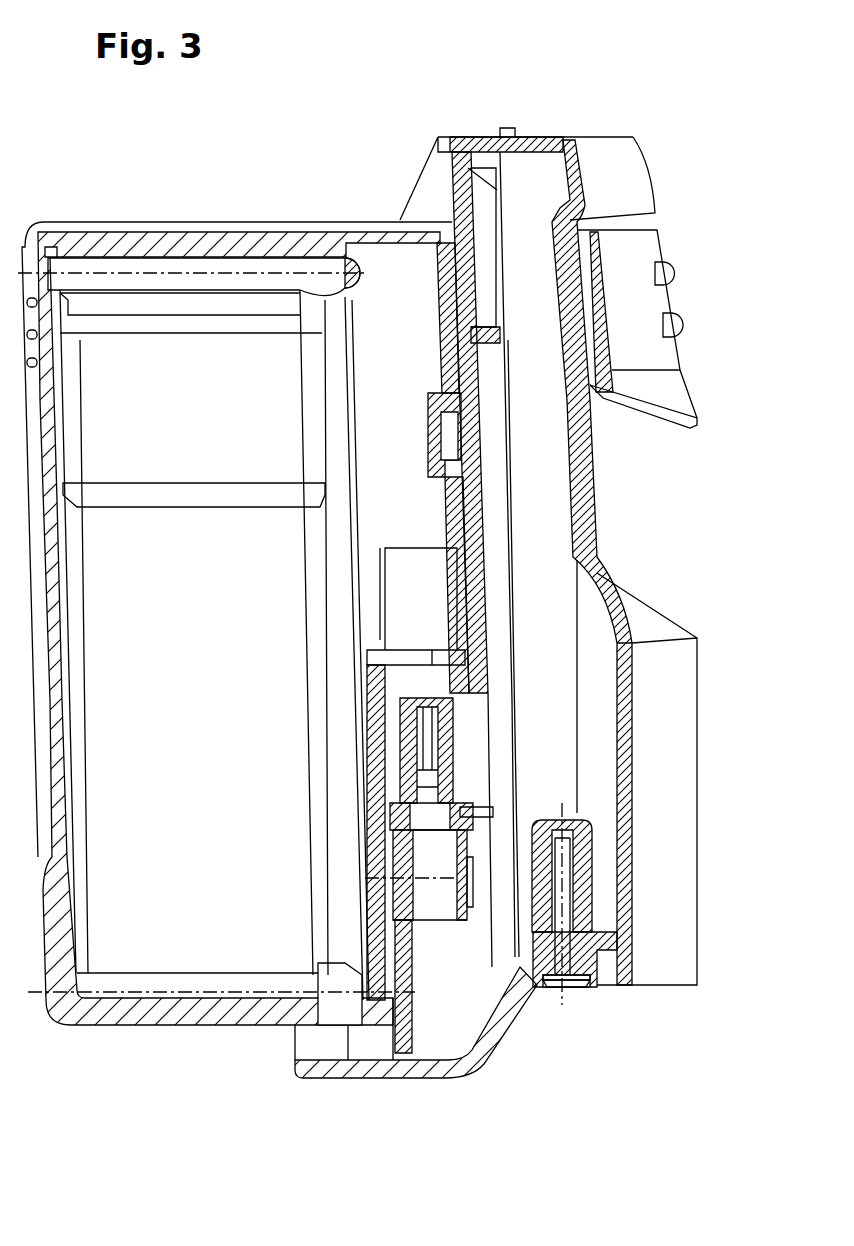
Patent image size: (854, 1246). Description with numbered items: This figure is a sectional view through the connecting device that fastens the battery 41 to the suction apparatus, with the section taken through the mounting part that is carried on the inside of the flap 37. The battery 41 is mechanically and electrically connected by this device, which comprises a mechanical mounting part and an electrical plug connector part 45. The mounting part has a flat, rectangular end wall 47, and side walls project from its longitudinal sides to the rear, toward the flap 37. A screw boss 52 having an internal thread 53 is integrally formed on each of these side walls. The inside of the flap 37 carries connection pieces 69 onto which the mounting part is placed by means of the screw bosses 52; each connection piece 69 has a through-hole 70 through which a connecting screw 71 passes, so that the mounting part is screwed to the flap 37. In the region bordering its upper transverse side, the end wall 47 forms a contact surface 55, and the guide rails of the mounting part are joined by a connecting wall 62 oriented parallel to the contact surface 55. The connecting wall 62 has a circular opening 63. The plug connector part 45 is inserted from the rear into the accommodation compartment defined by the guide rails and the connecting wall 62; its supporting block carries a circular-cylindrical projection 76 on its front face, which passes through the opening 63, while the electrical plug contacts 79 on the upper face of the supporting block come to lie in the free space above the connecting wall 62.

The battery 41 is at (205, 240).
The end wall 47 is at (450, 198).
The contact surface 55 is at (453, 306).
The flap 37 is at (593, 472).
The electrical plug contacts 79 is at (400, 706).
The connecting wall 62 is at (393, 818).
The circular-cylindrical projection 76 is at (398, 873).
The circular opening 63 is at (397, 921).
The electrical plug connector part 45 is at (435, 925).
The screw boss 52 is at (580, 907).
The internal thread 53 is at (567, 837).
The connection pieces 69 is at (538, 950).
The through-hole 70 is at (577, 990).
The connecting screw 71 is at (557, 983).